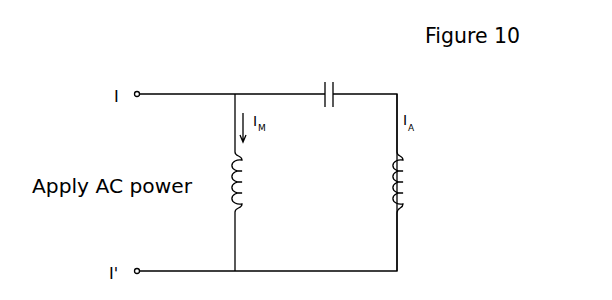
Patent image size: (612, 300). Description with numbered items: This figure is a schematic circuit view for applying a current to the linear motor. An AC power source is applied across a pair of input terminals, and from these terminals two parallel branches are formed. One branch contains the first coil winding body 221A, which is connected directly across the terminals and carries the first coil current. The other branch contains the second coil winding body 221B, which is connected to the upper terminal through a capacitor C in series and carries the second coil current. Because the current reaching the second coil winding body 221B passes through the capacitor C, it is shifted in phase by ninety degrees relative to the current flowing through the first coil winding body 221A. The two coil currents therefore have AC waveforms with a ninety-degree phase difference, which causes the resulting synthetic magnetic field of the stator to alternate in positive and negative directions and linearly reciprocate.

The first coil winding body 221A is at (265, 182).
The second coil winding body 221B is at (425, 182).
The capacitor C is at (329, 83).